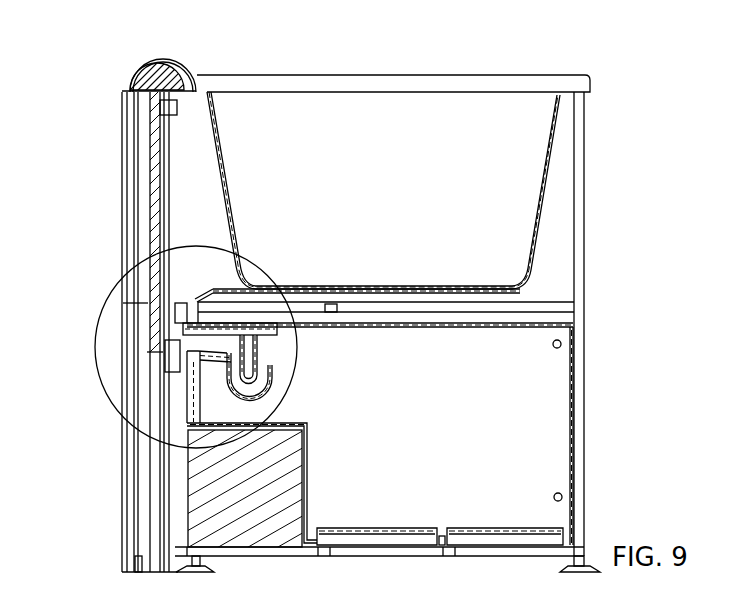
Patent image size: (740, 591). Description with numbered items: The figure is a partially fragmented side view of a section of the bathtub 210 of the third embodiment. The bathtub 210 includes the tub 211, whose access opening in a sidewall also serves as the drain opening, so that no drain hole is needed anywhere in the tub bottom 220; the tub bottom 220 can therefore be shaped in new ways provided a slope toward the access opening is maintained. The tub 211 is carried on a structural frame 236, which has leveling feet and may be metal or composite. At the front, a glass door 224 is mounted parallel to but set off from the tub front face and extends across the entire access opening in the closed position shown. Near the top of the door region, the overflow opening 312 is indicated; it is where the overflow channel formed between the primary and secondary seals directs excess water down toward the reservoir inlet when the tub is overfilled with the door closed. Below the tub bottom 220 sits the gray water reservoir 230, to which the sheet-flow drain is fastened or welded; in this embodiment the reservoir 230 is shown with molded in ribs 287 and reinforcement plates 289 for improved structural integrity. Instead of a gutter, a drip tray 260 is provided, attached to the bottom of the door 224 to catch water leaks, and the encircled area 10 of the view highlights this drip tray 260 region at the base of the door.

The drain connection detail 10 is at (100, 318).
The bathtub 210 is at (272, 58).
The tub 211 is at (446, 76).
The tub bottom 220 is at (366, 289).
The door 224 is at (150, 193).
The reservoir 230 is at (558, 325).
The structural frame 236 is at (580, 190).
The drip tray 260 is at (158, 352).
The molded in ribs 287 is at (441, 540).
The reinforcement plates 289 is at (398, 528).
The overflow opening 312 is at (166, 108).